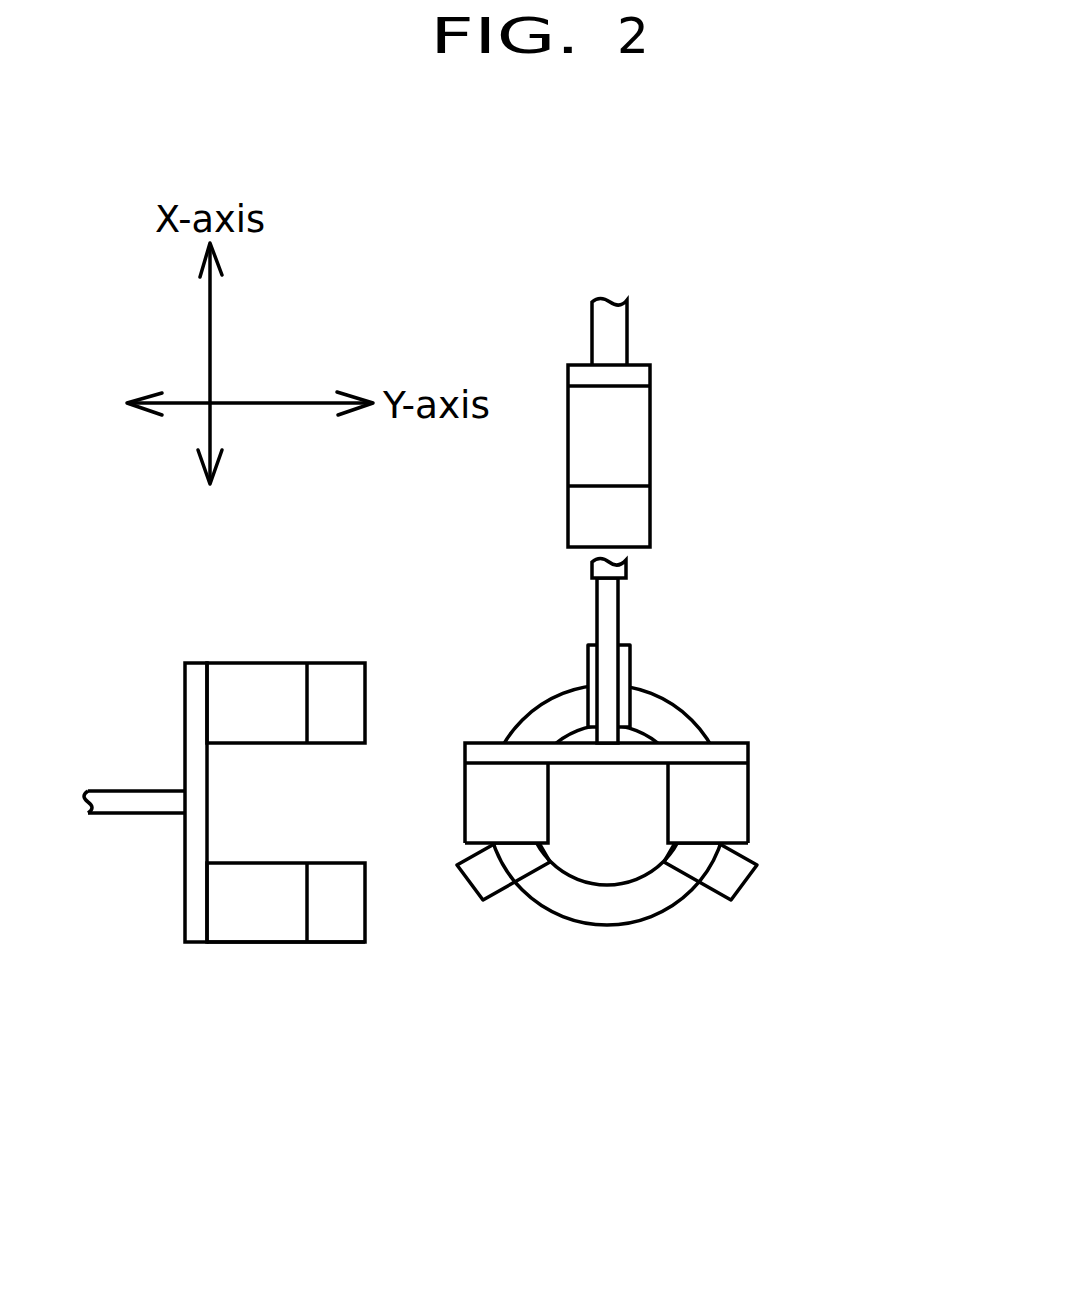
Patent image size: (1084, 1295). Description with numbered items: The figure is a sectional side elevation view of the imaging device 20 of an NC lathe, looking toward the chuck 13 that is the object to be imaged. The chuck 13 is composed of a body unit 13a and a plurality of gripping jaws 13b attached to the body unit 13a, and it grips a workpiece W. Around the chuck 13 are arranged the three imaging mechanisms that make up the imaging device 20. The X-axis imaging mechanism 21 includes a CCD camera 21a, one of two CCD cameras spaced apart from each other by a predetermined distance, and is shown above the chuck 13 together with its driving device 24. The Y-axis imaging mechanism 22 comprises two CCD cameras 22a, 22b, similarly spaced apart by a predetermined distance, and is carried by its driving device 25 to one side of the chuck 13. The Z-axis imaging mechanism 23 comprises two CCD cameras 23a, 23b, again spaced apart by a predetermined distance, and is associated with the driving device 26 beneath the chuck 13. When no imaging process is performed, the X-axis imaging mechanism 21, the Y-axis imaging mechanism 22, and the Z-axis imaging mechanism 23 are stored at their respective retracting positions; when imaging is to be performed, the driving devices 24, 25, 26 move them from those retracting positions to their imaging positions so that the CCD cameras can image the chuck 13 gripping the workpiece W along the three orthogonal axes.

The chuck 13 is at (660, 810).
The body unit 13a is at (682, 730).
The gripping jaws 13b is at (622, 665).
The workpiece W is at (648, 800).
The imaging device 20 is at (267, 828).
The X-axis imaging mechanism 21 is at (729, 423).
The CCD camera 21a is at (637, 425).
The Y-axis imaging mechanism 22 is at (328, 715).
The CCD camera 22a is at (267, 670).
The CCD camera 22b is at (330, 870).
The Z-axis imaging mechanism 23 is at (606, 951).
The CCD camera 23a is at (512, 833).
The CCD camera 23b is at (702, 833).
The driving device 24 is at (618, 328).
The driving device 25 is at (146, 797).
The driving device 26 is at (612, 612).